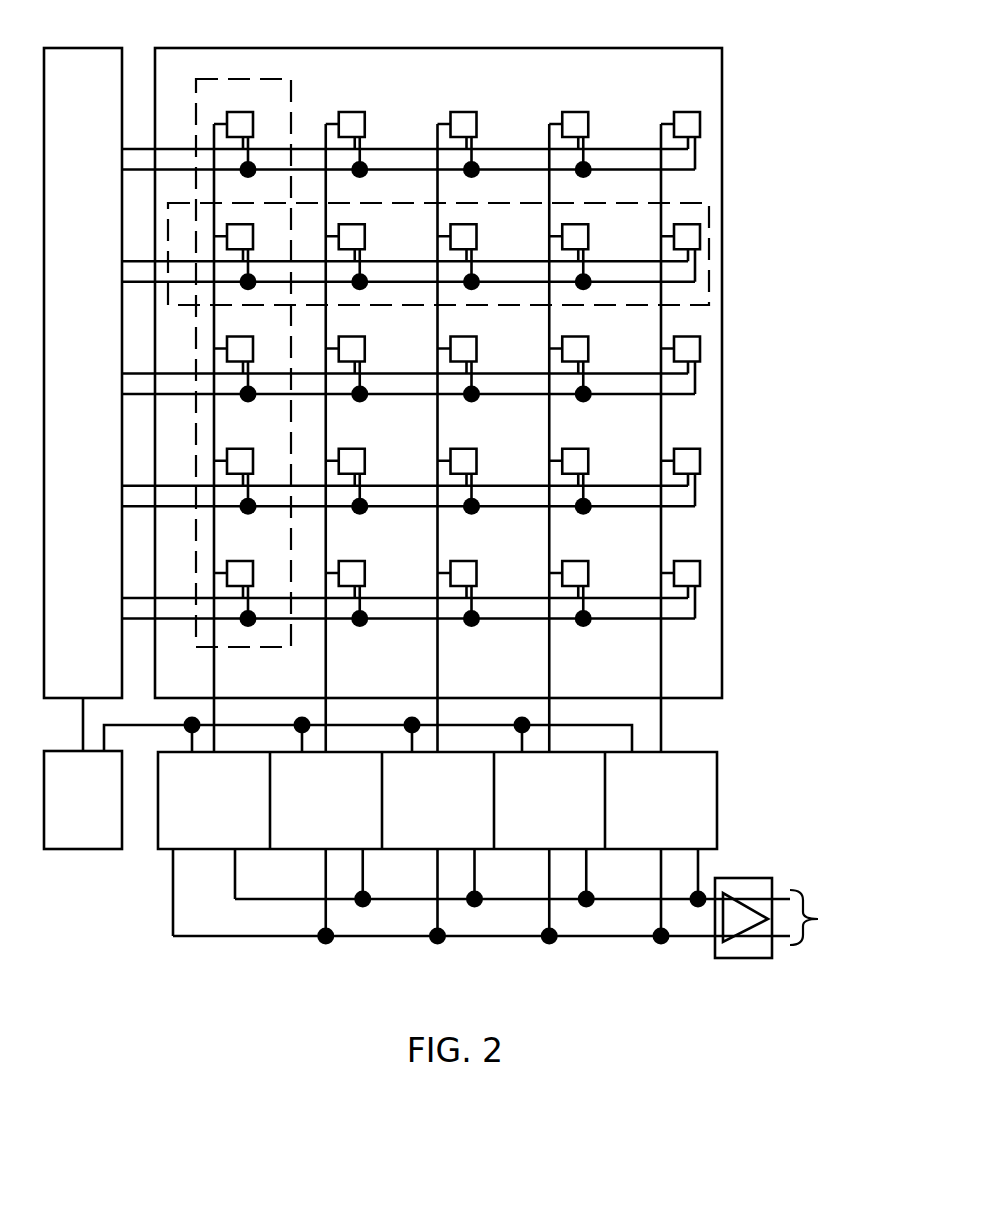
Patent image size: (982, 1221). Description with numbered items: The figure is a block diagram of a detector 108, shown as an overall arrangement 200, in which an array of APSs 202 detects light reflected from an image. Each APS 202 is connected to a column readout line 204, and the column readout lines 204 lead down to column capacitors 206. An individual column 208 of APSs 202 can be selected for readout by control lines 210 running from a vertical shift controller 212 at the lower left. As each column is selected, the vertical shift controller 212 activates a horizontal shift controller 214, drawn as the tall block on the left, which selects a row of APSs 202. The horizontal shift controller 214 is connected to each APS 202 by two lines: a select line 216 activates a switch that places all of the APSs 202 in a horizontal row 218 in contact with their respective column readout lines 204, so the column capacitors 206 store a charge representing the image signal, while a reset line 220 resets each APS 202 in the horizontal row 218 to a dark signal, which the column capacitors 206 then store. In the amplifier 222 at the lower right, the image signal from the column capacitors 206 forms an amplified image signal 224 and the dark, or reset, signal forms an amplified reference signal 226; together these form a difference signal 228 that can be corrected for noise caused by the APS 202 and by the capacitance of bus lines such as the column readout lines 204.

The detector 108 is at (657, 48).
The sensing circuit 200 is at (455, 523).
The APS 202 is at (700, 452).
The column readout line 204 is at (661, 736).
The column capacitors 206 is at (307, 852).
The column 208 is at (243, 79).
The control lines 210 is at (113, 724).
The vertical shift controller 212 is at (80, 851).
The horizontal shift controller 214 is at (85, 48).
The select line 216 is at (137, 597).
The horizontal row 218 is at (710, 251).
The reset line 220 is at (137, 620).
The amplifier 222 is at (737, 958).
The amplified image signal 224 is at (783, 890).
The amplified reference signal 226 is at (783, 945).
The difference signal 228 is at (828, 917).